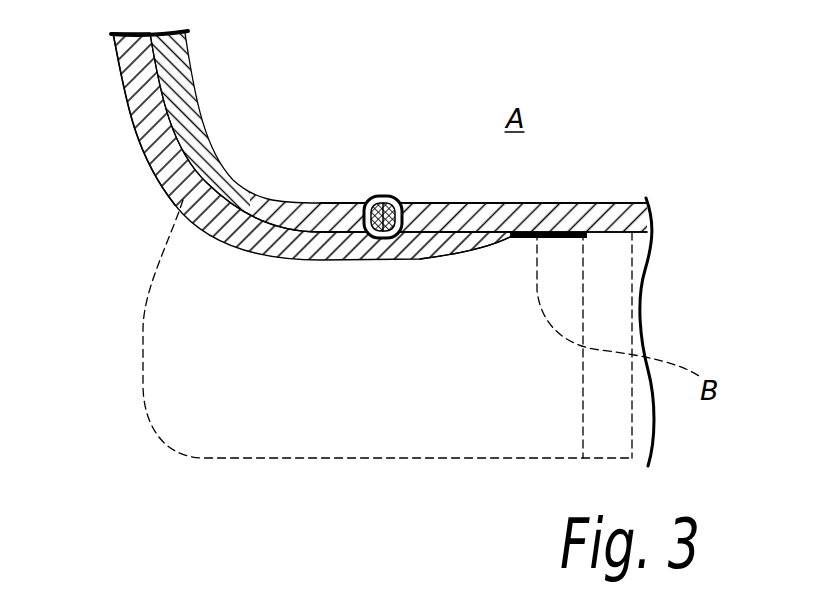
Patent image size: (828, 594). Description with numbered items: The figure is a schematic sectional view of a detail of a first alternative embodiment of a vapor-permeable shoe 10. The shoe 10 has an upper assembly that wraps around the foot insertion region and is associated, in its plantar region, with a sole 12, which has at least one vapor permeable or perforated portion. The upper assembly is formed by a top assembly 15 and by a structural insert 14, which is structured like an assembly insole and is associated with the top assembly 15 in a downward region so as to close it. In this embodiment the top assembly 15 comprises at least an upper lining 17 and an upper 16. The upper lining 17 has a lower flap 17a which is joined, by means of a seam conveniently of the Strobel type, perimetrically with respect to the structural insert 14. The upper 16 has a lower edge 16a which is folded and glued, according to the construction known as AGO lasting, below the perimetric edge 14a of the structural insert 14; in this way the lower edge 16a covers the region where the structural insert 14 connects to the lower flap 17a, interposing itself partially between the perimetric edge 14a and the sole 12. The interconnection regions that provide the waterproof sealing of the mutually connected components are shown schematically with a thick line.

The vapor-permeable shoe 10 is at (567, 107).
The sole 12 is at (142, 323).
The structural insert 14 is at (557, 203).
The perimetric edge 14a is at (422, 203).
The top assembly 15 is at (127, 125).
The upper 16 is at (128, 100).
The lower edge 16a is at (398, 258).
The upper lining 17 is at (197, 113).
The lower flap 17a is at (364, 200).